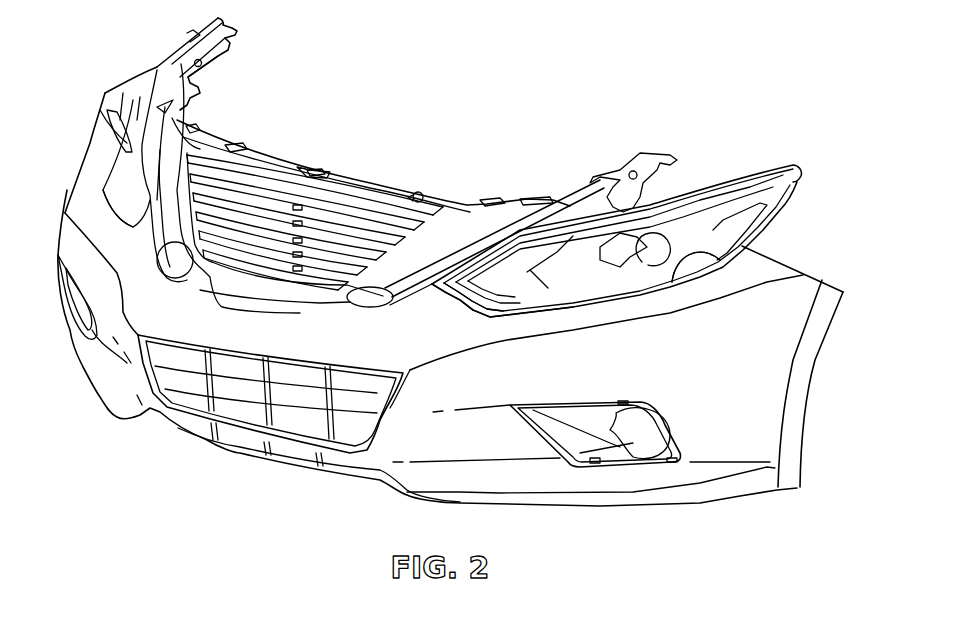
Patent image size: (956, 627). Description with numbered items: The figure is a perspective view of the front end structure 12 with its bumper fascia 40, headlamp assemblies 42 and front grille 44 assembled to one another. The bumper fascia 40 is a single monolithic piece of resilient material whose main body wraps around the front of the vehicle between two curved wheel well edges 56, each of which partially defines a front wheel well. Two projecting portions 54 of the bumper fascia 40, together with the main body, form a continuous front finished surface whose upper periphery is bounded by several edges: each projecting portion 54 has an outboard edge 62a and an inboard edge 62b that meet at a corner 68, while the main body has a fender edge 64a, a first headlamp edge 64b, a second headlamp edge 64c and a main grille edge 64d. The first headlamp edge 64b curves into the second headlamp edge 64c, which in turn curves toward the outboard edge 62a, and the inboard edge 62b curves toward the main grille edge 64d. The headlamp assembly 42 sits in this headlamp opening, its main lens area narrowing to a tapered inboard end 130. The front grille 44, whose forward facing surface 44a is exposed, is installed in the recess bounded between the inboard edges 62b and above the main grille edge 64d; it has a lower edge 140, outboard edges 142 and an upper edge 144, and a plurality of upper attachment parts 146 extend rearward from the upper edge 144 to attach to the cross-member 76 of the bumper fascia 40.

The front end structure 12 is at (556, 70).
The bumper fascia 40 is at (130, 365).
The headlamp assembly 42 is at (133, 97).
The front grille 44 is at (330, 197).
The forward facing surface 44a is at (297, 296).
The projecting portion 54 is at (418, 301).
The wheel well edge 56 is at (810, 396).
The outboard edge 62a is at (133, 194).
The inboard edge 62b is at (183, 282).
The fender edge 64a is at (782, 263).
The first headlamp edge 64b is at (705, 250).
The second headlamp edge 64c is at (567, 305).
The main grille edge 64d is at (227, 289).
The corner 68 is at (433, 295).
The cross-member 76 is at (311, 169).
The tapered inboard end 130 is at (425, 284).
The lower edge 140 is at (248, 296).
The outboard edge 142 is at (153, 162).
The upper edge 144 is at (276, 165).
The upper attachment part 146 is at (195, 127).